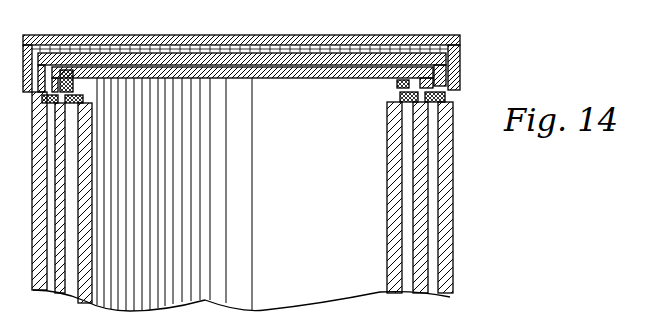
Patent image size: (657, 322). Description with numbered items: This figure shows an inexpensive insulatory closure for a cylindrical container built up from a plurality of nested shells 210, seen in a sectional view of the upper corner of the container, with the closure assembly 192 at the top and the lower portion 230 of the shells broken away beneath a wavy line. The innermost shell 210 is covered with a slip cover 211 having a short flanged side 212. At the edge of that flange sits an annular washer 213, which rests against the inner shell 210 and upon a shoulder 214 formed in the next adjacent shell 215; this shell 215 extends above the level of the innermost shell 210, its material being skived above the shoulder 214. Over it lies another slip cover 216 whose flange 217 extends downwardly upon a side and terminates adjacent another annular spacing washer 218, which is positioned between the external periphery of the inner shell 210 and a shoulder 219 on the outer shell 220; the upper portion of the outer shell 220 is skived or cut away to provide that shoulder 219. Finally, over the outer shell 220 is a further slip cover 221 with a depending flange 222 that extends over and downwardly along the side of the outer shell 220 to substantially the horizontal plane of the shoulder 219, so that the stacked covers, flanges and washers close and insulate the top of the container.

The closure assembly 192 is at (507, 20).
The shells 210 is at (395, 296).
The slip cover 211 is at (300, 79).
The short flanged side 212 is at (399, 83).
The annular washer 213 is at (404, 97).
The shoulder 214 is at (416, 122).
The shell 215 is at (424, 131).
The slip cover 216 is at (383, 54).
The flange 217 is at (457, 66).
The annular spacing washer 218 is at (434, 82).
The shoulder 219 is at (434, 99).
The outer shell 220 is at (443, 110).
The slip cover 221 is at (440, 27).
The depending flange 222 is at (461, 48).
The container bottom portion 230 is at (342, 318).